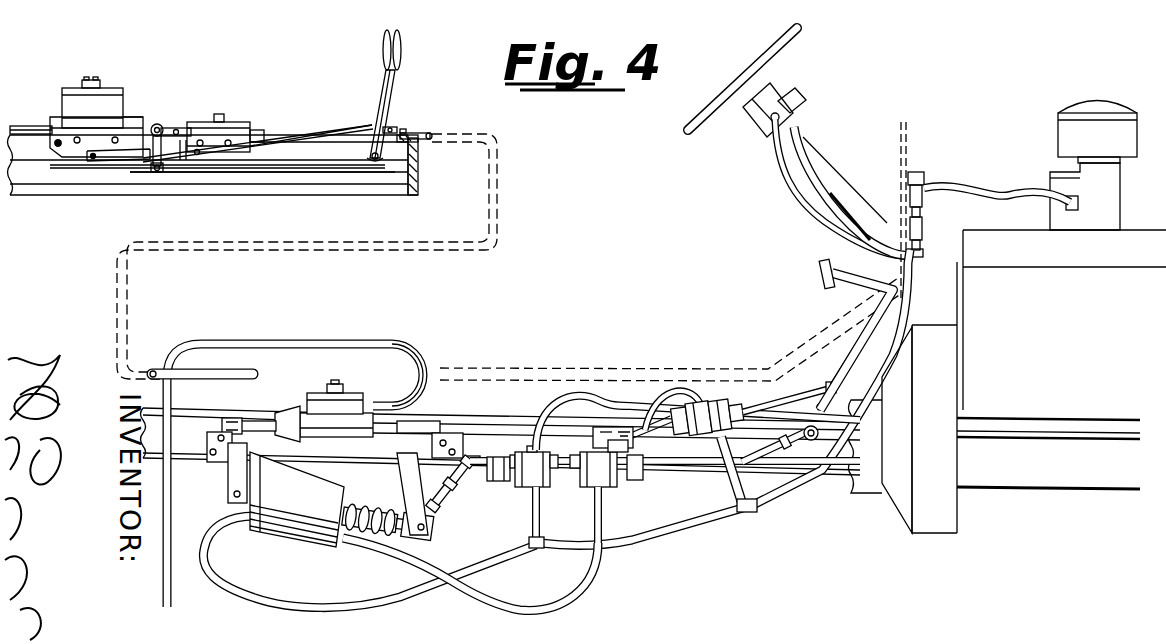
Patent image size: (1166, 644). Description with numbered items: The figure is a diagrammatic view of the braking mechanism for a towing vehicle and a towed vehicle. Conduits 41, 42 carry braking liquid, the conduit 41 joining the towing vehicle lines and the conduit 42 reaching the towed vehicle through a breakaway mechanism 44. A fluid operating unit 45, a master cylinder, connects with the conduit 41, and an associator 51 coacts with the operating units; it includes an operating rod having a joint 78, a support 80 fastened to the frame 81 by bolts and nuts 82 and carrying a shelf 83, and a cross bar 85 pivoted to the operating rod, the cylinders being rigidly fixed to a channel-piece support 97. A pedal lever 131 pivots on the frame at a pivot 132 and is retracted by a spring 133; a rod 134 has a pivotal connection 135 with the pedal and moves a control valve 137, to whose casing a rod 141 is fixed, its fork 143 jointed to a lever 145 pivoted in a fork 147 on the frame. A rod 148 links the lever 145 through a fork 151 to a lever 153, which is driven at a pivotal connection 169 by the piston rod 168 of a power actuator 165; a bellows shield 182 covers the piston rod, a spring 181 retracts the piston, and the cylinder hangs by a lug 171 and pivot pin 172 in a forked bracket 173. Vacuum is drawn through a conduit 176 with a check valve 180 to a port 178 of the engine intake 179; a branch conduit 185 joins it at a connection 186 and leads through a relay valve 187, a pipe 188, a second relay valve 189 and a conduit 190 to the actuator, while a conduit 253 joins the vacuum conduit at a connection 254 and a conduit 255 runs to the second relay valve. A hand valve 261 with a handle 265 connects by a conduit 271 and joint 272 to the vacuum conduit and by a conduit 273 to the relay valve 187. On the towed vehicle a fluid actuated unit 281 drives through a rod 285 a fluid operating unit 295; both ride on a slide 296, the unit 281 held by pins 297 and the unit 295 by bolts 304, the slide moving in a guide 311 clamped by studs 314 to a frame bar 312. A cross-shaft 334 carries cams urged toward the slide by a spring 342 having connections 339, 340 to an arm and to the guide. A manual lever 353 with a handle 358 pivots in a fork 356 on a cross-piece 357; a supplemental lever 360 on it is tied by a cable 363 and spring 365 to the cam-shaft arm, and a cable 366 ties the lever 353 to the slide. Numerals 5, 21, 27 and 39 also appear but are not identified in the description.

The push rod 39 is at (22, 126).
The fluid operating unit 295 is at (101, 90).
The cross-shaft 334 is at (160, 124).
The breakaway mechanism 44 is at (195, 99).
The slide 296 is at (134, 136).
The rod 285 is at (184, 126).
The fluid actuated unit 281 is at (237, 122).
The bolts 304 is at (60, 148).
The spring 342 is at (96, 160).
The studs 314 is at (58, 147).
The connection 340 is at (93, 160).
The connection 339 is at (155, 172).
The guide 311 is at (183, 162).
The spring 365 is at (199, 155).
The pins 297 is at (265, 158).
The flexible connection 366 is at (303, 158).
The bar 312 is at (343, 162).
The flexible connection 363 is at (353, 133).
The supplemental lever 360 is at (383, 38).
The handle 358 is at (401, 43).
The lever 353 is at (397, 83).
The control lever assembly 27 is at (415, 113).
The fork 356 is at (397, 130).
The conduit 42 is at (432, 141).
The cross-piece 357 is at (419, 188).
The hand valve 261 is at (800, 99).
The handle 265 is at (752, 124).
The conduit 271 is at (822, 183).
The conduit 273 is at (781, 180).
The vehicle 21 is at (923, 113).
The check valve 180 is at (923, 179).
The conduit 176 is at (1011, 191).
The port 178 is at (1072, 209).
The intake 179 is at (1113, 233).
The joint 272 is at (917, 239).
The pedal lever 131 is at (851, 288).
The pivotal connection 135 is at (823, 405).
The pivot 132 is at (809, 440).
The rod 134 is at (771, 397).
The control valve 137 is at (708, 402).
The conduit 255 is at (683, 390).
The fork 147 is at (600, 426).
The lever 145 is at (622, 430).
The fork 143 is at (637, 429).
The rod 141 is at (653, 426).
The brake system 5 is at (180, 433).
The conduit 253 is at (726, 460).
The spring 133 is at (761, 467).
The connection 254 is at (749, 512).
The second relay valve 189 is at (616, 478).
The pipe 188 is at (561, 465).
The relay valve 187 is at (549, 489).
The conduit 185 is at (532, 521).
The connection 186 is at (537, 549).
The conduit 190 is at (591, 571).
The spring 181 is at (446, 488).
The lever 153 is at (428, 513).
The pivotal connection 169 is at (428, 538).
The power actuator 165 is at (305, 548).
The bellows shield 182 is at (363, 535).
The piston rod 168 is at (397, 540).
The forked bracket 173 is at (253, 473).
The lug 171 is at (255, 493).
The pivot pin 172 is at (255, 507).
The frame 81 is at (152, 459).
The bolts and nuts 82 is at (218, 448).
The shelf 83 is at (232, 463).
The support 80 is at (235, 452).
The cross bar 85 is at (236, 417).
The associator 51 is at (246, 418).
The conduit 41 is at (275, 342).
The fluid operating unit 45 is at (346, 392).
The joint 78 is at (421, 422).
The fork 151 is at (425, 422).
The rod 148 is at (495, 427).
The support 97 is at (393, 443).